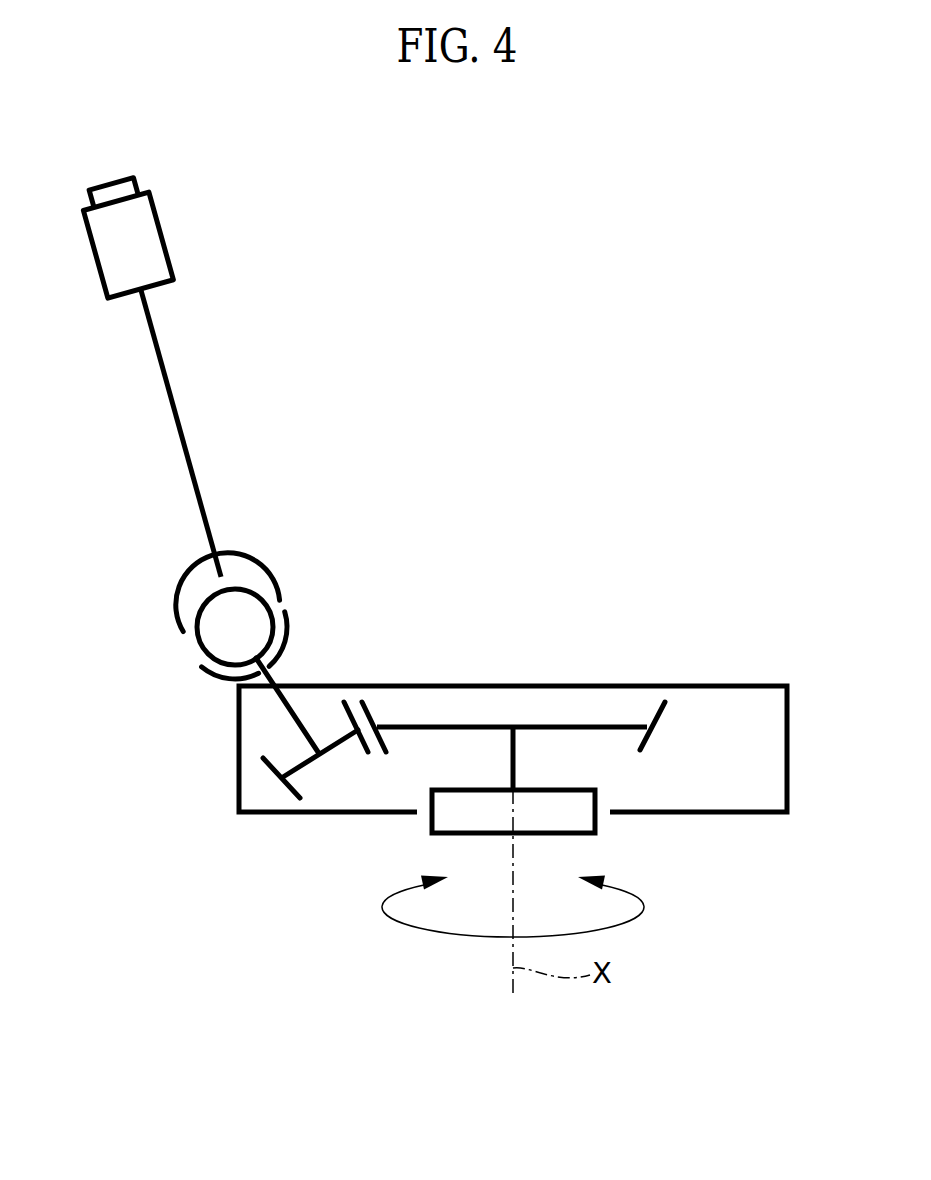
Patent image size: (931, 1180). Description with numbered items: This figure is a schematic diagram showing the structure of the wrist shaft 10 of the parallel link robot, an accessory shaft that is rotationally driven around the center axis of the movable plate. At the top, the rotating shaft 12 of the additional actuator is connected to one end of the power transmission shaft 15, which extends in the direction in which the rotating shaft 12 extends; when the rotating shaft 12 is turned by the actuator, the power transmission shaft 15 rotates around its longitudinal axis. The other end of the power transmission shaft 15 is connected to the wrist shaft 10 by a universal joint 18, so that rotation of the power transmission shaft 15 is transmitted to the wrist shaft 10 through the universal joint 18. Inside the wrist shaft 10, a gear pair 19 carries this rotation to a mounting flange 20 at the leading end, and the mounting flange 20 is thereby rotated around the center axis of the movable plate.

The wrist shaft 10 is at (272, 830).
The rotating shaft 12 is at (128, 190).
The power transmission shaft 15 is at (173, 398).
The universal joint 18 is at (181, 651).
The gear pair 19 is at (373, 778).
The mounting flange 20 is at (570, 833).